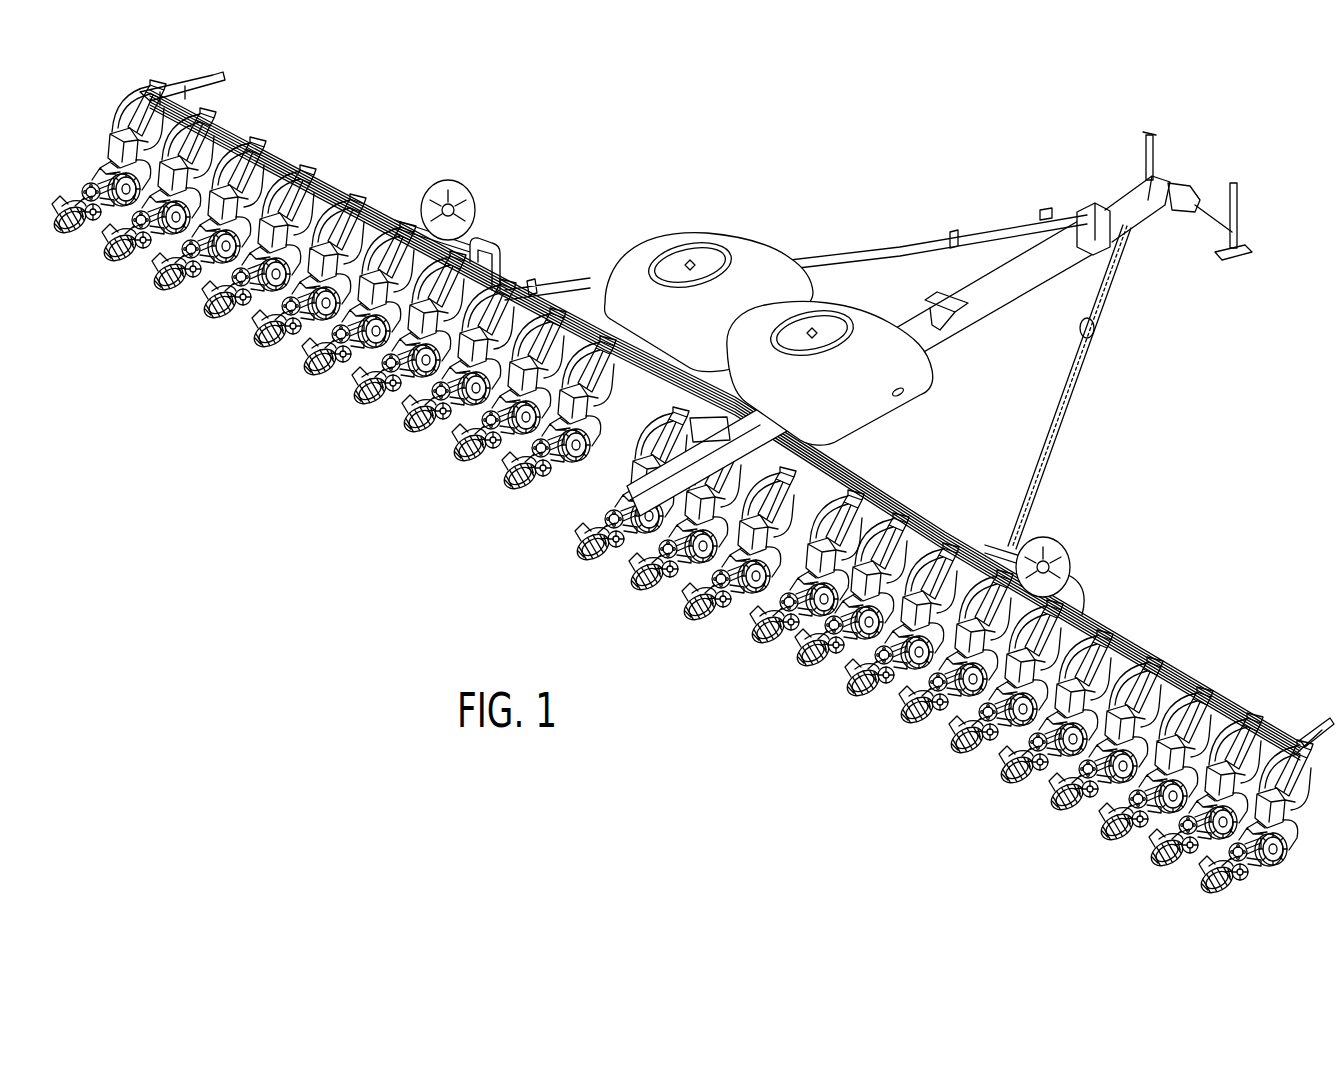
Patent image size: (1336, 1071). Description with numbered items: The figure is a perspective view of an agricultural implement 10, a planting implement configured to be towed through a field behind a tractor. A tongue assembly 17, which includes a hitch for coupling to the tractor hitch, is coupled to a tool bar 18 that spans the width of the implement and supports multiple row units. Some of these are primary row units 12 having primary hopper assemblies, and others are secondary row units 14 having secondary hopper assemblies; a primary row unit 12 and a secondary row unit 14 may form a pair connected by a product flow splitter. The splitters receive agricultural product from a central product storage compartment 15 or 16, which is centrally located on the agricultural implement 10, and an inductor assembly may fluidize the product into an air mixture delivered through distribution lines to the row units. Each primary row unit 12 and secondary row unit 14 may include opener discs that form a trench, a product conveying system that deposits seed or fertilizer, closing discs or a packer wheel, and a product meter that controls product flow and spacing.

The agricultural implement 10 is at (860, 115).
The primary row unit 12 is at (553, 440).
The secondary row unit 14 is at (480, 412).
The central product storage compartment 15 is at (918, 378).
The central product storage compartment 16 is at (742, 250).
The tongue assembly 17 is at (1010, 292).
The tool bar 18 is at (1148, 657).